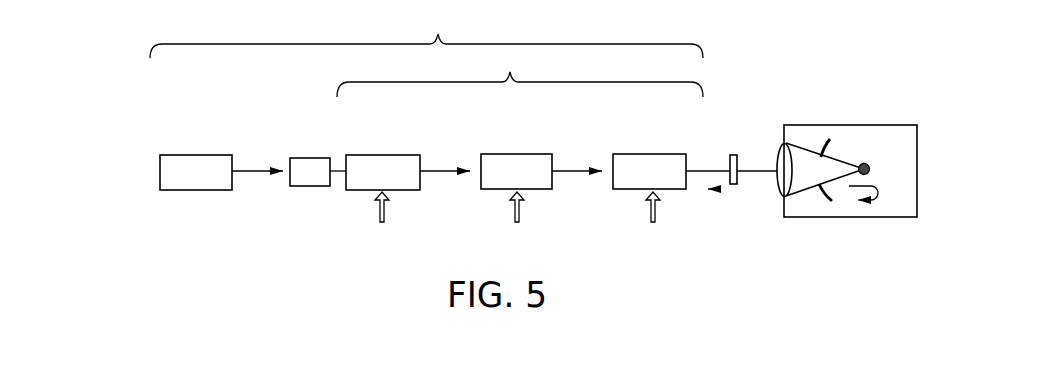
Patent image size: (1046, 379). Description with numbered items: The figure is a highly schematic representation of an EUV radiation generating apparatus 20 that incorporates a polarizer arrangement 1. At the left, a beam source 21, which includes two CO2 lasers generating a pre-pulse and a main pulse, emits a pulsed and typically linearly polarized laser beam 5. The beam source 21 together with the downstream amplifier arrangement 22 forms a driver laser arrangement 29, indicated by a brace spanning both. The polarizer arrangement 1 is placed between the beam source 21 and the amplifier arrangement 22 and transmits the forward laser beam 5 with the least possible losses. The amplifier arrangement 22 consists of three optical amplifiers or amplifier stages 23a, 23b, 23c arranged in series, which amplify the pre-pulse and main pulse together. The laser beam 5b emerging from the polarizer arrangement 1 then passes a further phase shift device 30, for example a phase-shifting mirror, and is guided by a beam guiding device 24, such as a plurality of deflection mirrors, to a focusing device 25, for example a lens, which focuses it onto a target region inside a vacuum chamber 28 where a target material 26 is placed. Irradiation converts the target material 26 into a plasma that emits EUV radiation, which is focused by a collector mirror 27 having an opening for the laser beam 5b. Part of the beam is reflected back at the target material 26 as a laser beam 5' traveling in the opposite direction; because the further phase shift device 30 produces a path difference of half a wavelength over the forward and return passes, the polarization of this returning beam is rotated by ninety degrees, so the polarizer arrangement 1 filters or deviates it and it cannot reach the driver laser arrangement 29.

The EUV radiation generating apparatus 20 is at (156, 101).
The driver laser arrangement 29 is at (426, 32).
The amplifier arrangement 22 is at (520, 71).
The beam source 21 is at (201, 170).
The laser beam 5 is at (481, 141).
The polarizer arrangement 1 is at (310, 178).
The laser beam emerging from the polarizer arrangement 5b is at (338, 165).
The optical amplifier 23a is at (388, 168).
The optical amplifier 23b is at (522, 168).
The optical amplifier 23c is at (653, 168).
The back-reflected laser beam 5' is at (704, 221).
The further phase shift device 30 is at (734, 156).
The beam guiding device 24 is at (761, 172).
The focusing device 25 is at (781, 157).
The target material 26 is at (868, 166).
The collector mirror 27 is at (822, 198).
The vacuum chamber 28 is at (852, 124).